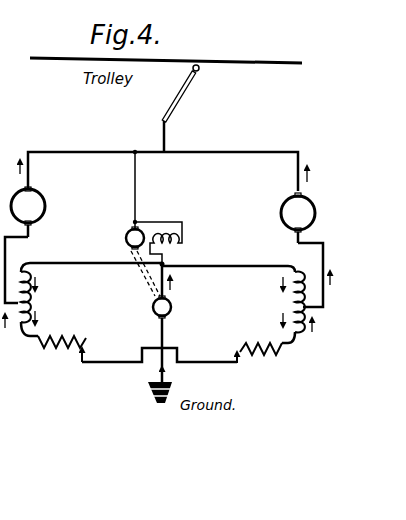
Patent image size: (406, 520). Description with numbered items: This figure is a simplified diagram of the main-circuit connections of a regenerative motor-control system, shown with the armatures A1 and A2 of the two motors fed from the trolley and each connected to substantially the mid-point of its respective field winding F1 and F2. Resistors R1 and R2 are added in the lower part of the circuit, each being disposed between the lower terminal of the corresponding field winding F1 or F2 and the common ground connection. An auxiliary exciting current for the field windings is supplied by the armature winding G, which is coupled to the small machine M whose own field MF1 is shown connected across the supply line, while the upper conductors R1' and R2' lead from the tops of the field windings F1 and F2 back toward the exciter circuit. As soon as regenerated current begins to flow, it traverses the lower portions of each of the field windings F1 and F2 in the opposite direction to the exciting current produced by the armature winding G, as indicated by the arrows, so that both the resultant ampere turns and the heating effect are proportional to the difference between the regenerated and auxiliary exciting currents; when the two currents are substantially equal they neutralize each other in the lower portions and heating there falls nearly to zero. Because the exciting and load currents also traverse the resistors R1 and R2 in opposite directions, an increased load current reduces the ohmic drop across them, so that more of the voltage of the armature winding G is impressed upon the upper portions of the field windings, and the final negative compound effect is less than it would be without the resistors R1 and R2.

The armature A1 is at (43, 212).
The armature A2 is at (313, 218).
The auxiliary motor M is at (124, 240).
The field winding of auxiliary motor MF1 is at (178, 242).
The armature winding G is at (177, 303).
The field winding F1 is at (91, 299).
The field winding F2 is at (237, 304).
The resistor R1 is at (62, 337).
The resistor R2 is at (259, 356).
The conductor from first field winding R1' is at (68, 254).
The conductor from second field winding R2' is at (235, 256).